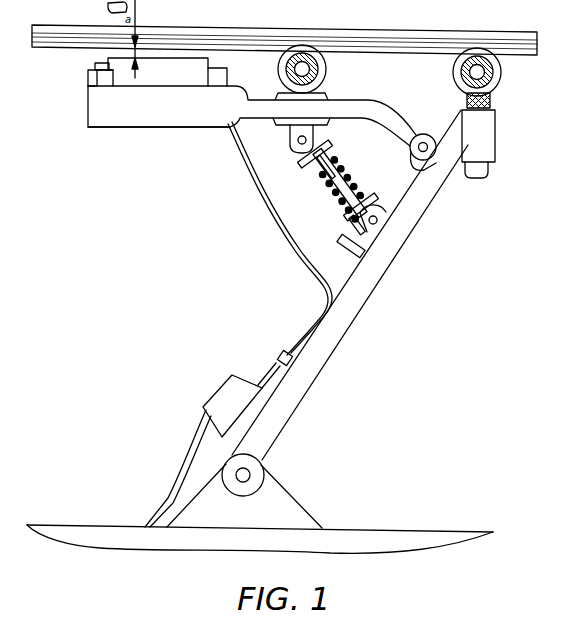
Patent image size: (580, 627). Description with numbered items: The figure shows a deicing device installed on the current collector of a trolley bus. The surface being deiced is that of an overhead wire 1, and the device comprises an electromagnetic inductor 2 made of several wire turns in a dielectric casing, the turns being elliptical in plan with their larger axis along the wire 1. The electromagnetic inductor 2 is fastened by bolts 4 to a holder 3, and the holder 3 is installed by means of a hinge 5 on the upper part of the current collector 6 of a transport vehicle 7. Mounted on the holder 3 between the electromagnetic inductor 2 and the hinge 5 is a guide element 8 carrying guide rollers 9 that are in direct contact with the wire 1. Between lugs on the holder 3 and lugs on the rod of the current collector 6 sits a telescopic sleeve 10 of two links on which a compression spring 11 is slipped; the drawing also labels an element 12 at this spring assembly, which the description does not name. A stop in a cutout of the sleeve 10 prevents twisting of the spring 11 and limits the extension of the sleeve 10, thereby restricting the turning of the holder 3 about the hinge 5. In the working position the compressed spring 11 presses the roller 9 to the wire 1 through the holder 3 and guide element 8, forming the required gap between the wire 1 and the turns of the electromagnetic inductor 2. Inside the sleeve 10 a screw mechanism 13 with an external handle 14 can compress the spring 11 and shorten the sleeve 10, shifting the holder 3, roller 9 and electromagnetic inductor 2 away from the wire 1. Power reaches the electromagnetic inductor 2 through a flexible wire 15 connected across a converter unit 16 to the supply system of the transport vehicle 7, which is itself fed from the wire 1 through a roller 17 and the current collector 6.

The wire 1 is at (393, 34).
The electromagnetic inductor 2 is at (178, 83).
The holder 3 is at (265, 110).
The bolts 4 is at (112, 118).
The hinge 5 is at (434, 134).
The current collector 6 is at (322, 356).
The transport vehicle 7 is at (372, 537).
The guide element 8 is at (275, 100).
The guide rollers 9 is at (321, 70).
The sleeve 10 is at (338, 159).
The compression spring 11 is at (331, 206).
The upper spring plate 12 is at (319, 176).
The screw mechanism 13 is at (377, 198).
The handle 14 is at (345, 243).
The flexible wire 15 is at (263, 174).
The converter unit 16 is at (217, 396).
The roller 17 is at (462, 73).